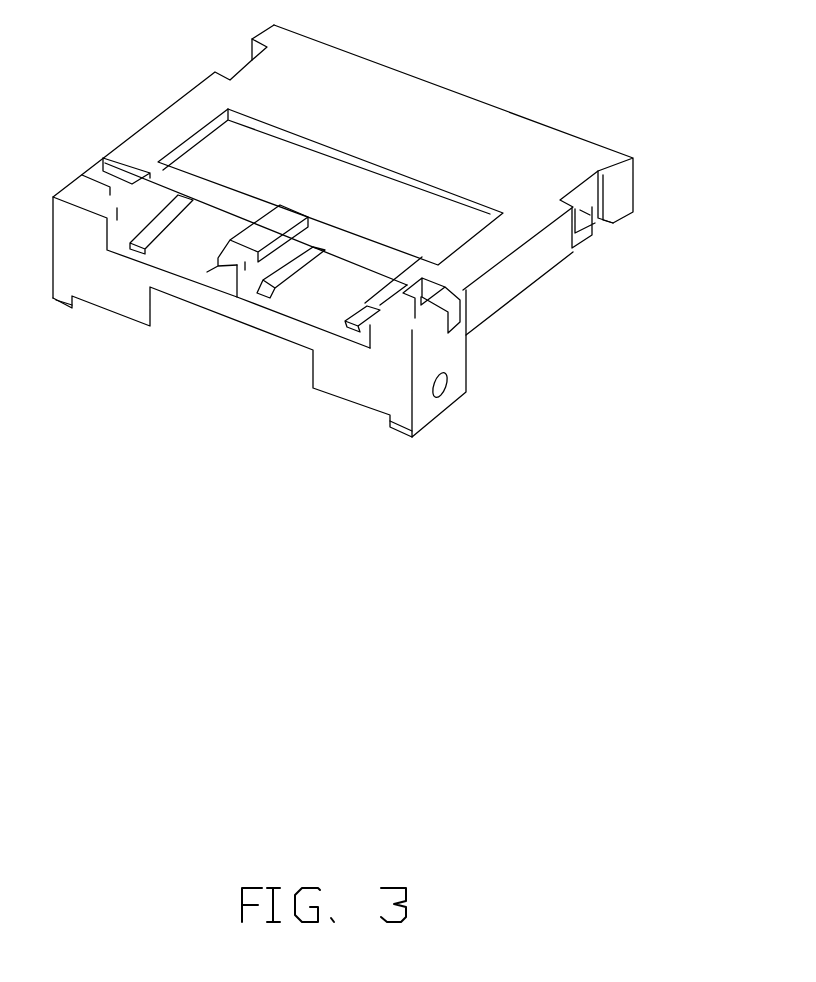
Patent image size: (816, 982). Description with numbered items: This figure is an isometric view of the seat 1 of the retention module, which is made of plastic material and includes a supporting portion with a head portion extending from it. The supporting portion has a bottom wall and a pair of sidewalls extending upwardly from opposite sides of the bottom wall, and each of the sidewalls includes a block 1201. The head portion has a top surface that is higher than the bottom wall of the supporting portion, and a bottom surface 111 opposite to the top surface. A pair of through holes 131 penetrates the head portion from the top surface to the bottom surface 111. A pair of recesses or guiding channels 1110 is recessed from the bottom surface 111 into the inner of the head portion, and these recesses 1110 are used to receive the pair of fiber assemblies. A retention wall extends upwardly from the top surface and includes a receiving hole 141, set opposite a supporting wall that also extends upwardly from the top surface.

The seat 1 is at (360, 256).
The bottom surface 111 is at (248, 248).
The recesses or guiding channels 1110 is at (318, 302).
The through holes 131 is at (372, 305).
The receiving hole 141 is at (448, 388).
The block 1201 is at (619, 267).